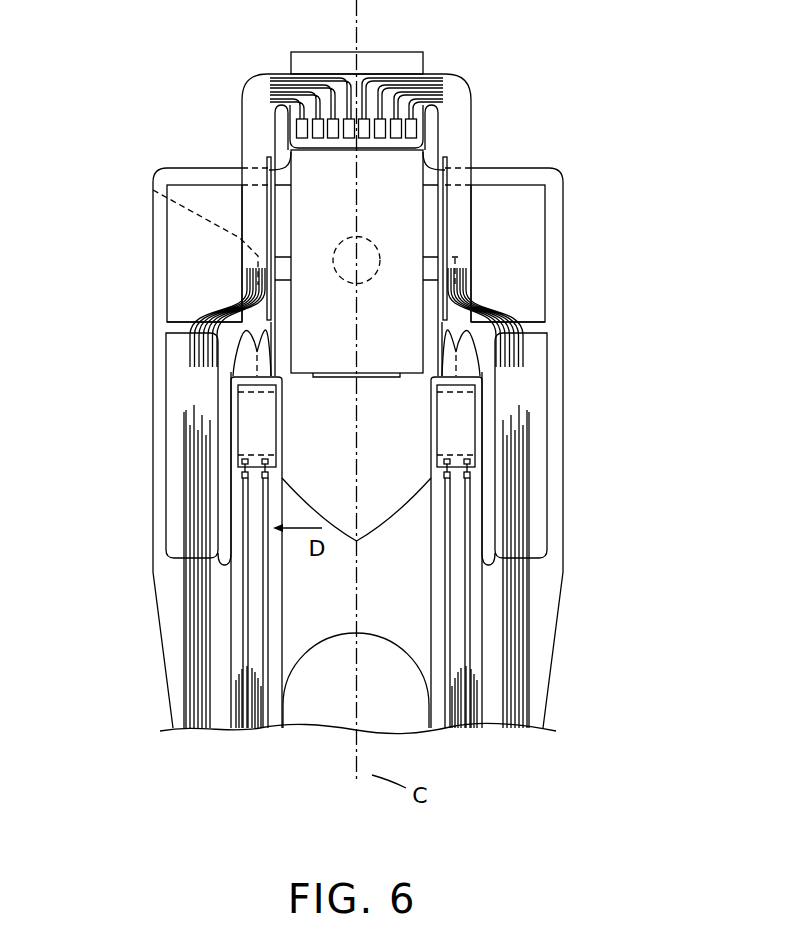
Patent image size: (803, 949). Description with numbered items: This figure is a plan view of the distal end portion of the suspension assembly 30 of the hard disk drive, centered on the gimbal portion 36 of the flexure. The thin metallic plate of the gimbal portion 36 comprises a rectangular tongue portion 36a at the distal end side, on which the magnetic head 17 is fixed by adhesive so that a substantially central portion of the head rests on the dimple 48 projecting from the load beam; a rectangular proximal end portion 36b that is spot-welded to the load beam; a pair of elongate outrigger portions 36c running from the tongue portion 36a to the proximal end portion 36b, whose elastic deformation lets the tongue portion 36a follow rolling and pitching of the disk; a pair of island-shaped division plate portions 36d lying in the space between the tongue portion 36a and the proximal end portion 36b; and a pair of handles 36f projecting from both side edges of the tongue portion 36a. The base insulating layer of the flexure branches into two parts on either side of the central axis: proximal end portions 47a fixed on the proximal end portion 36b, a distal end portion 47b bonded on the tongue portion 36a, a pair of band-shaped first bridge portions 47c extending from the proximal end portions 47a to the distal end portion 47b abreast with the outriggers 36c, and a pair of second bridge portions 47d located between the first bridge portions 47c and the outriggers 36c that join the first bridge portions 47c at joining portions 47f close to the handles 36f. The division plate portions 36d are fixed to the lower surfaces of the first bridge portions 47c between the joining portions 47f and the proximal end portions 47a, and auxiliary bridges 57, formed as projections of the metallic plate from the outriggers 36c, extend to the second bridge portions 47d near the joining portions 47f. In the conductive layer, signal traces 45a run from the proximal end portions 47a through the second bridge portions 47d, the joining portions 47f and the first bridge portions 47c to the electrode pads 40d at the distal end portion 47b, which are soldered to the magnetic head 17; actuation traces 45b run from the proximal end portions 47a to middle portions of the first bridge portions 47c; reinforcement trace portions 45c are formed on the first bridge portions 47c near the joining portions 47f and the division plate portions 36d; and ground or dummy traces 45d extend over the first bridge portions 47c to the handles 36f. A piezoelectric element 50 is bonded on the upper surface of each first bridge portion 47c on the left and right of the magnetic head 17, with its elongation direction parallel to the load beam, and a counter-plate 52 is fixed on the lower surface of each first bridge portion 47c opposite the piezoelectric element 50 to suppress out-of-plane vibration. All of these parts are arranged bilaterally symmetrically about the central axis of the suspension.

The magnetic head 17 is at (313, 235).
The suspension assembly 30 is at (136, 665).
The gimbal portion 36 is at (136, 407).
The tongue portion 36a is at (405, 192).
The proximal end portion 36b is at (407, 548).
The outrigger portions 36c is at (152, 228).
The division plate portions 36d is at (262, 372).
The handles 36f is at (240, 240).
The electrode pads 40d is at (300, 127).
The signal traces 45a is at (205, 647).
The actuation traces 45b is at (243, 690).
The reinforcement trace portions 45c is at (258, 363).
The ground traces or dummy traces 45d is at (335, 125).
The proximal end portions 47a is at (262, 577).
The distal end portion 47b is at (327, 100).
The first bridge portions 47c is at (253, 220).
The second bridge portions 47d is at (200, 487).
The joining portions 47f is at (243, 300).
The dimple 48 is at (348, 286).
The piezoelectric element 50 is at (258, 415).
The counter-plate 52 is at (290, 439).
The auxiliary bridges 57 is at (175, 320).